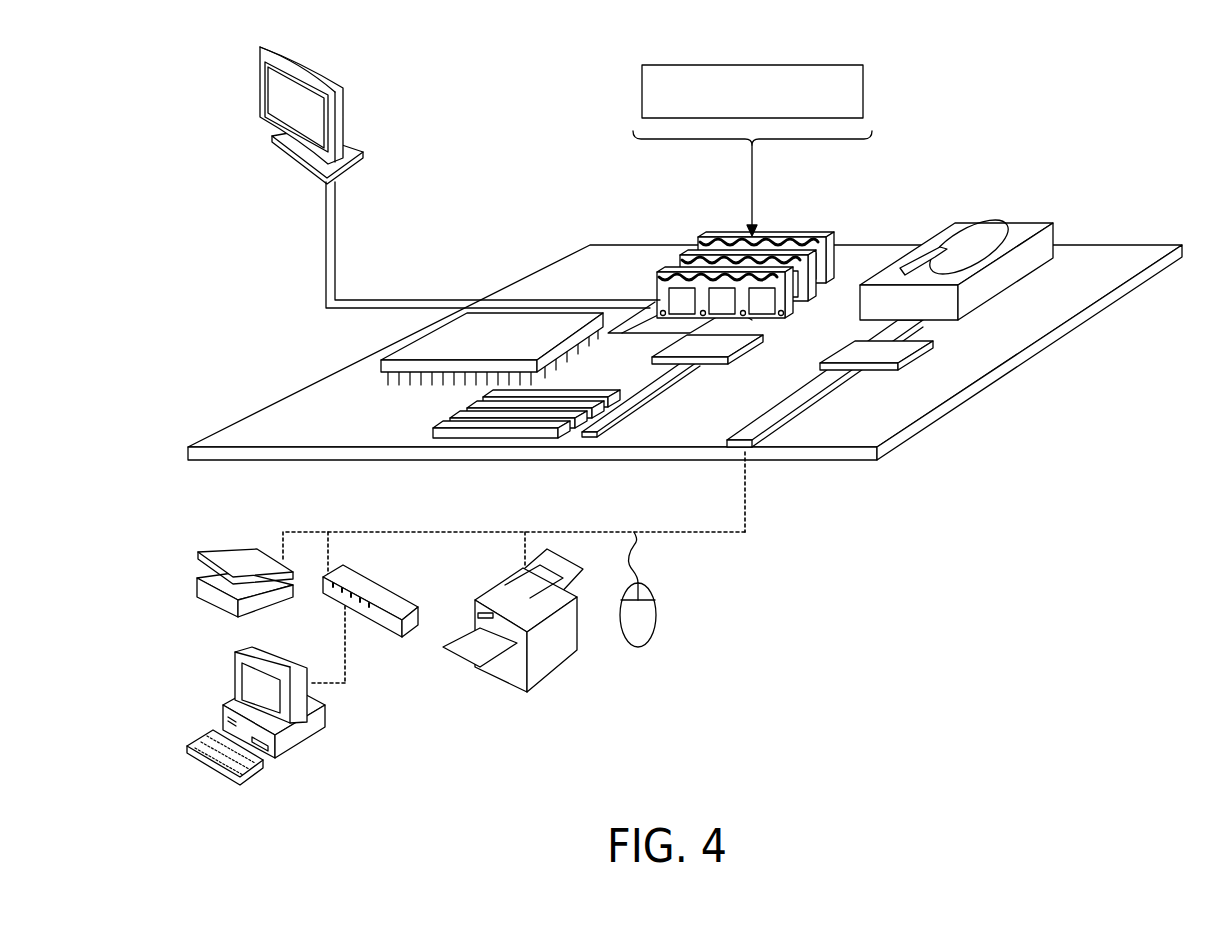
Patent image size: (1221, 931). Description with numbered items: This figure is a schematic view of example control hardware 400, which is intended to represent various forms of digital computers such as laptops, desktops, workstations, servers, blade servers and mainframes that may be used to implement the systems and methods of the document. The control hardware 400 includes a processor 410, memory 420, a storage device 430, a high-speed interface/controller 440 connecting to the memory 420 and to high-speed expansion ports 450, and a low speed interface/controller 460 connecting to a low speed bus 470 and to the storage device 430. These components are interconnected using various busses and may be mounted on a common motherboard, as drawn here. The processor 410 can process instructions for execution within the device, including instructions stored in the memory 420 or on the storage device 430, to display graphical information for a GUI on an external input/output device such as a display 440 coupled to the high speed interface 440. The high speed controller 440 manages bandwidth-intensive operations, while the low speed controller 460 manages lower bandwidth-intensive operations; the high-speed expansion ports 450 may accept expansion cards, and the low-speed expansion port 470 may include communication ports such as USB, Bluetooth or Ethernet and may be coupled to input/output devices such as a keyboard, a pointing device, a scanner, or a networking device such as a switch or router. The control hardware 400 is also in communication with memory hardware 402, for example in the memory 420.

The control hardware 400 is at (928, 102).
The memory hardware 402 is at (752, 65).
The processor 410 is at (382, 363).
The memory 420 is at (680, 258).
The storage device 430 is at (1000, 222).
The high-speed interface/controller 440 is at (258, 92).
The high-speed expansion ports 450 is at (433, 426).
The low speed interface/controller 460 is at (862, 348).
The low speed bus / low-speed expansion port 470 is at (757, 453).